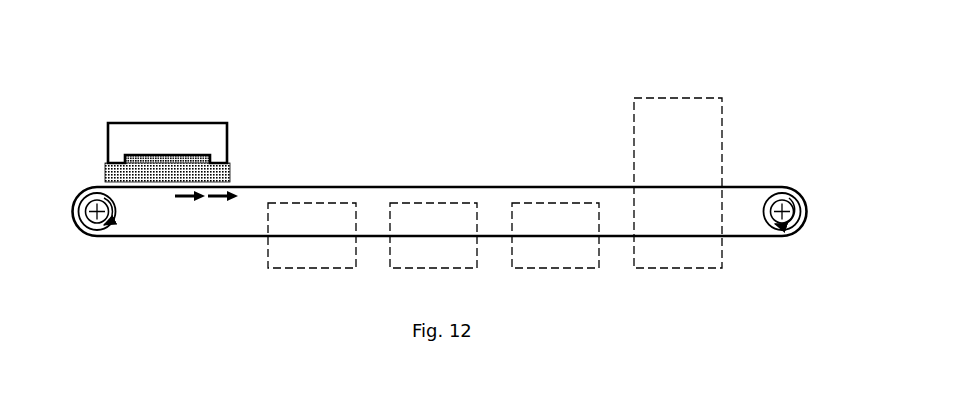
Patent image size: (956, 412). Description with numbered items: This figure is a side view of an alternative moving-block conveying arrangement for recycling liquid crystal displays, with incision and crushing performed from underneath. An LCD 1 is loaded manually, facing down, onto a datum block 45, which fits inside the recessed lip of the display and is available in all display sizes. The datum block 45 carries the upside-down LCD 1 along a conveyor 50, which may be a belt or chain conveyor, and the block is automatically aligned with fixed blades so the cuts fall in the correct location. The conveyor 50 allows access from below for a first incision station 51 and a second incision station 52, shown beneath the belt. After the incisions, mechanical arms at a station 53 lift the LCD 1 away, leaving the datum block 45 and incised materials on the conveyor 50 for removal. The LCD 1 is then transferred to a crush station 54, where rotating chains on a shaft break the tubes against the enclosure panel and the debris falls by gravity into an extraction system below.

The LCD 1 is at (198, 123).
The datum block 45 is at (233, 169).
The conveyor 50 is at (181, 240).
The first incision station 51 is at (313, 268).
The second incision station 52 is at (445, 268).
The station 53 is at (573, 268).
The crush station 54 is at (673, 98).